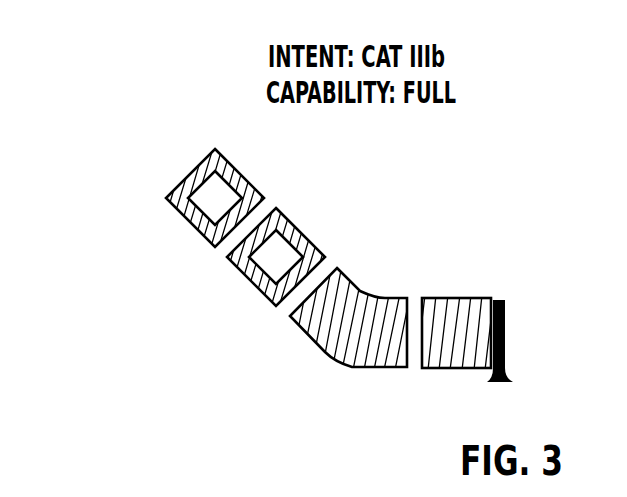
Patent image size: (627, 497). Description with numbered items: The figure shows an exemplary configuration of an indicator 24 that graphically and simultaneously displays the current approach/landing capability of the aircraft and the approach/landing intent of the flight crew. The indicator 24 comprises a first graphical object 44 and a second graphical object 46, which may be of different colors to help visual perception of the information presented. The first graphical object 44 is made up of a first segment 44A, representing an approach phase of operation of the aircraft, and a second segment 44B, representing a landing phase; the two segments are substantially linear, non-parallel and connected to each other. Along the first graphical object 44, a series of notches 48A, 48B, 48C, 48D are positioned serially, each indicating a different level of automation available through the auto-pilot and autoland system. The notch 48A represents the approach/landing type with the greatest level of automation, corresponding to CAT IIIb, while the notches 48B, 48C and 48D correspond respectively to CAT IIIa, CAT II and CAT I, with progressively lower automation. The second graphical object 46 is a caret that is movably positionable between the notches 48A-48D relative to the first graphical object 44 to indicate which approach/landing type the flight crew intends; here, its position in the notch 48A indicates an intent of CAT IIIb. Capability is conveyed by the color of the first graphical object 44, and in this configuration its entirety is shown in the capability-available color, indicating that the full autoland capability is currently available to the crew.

The indicator 24 is at (167, 118).
The first graphical object 44 is at (183, 209).
The first segment 44A is at (317, 221).
The second segment 44B is at (458, 276).
The second graphical object 46 is at (500, 300).
The notch 48A is at (490, 370).
The notch 48B is at (413, 366).
The notch 48C is at (283, 306).
The notch 48D is at (228, 247).